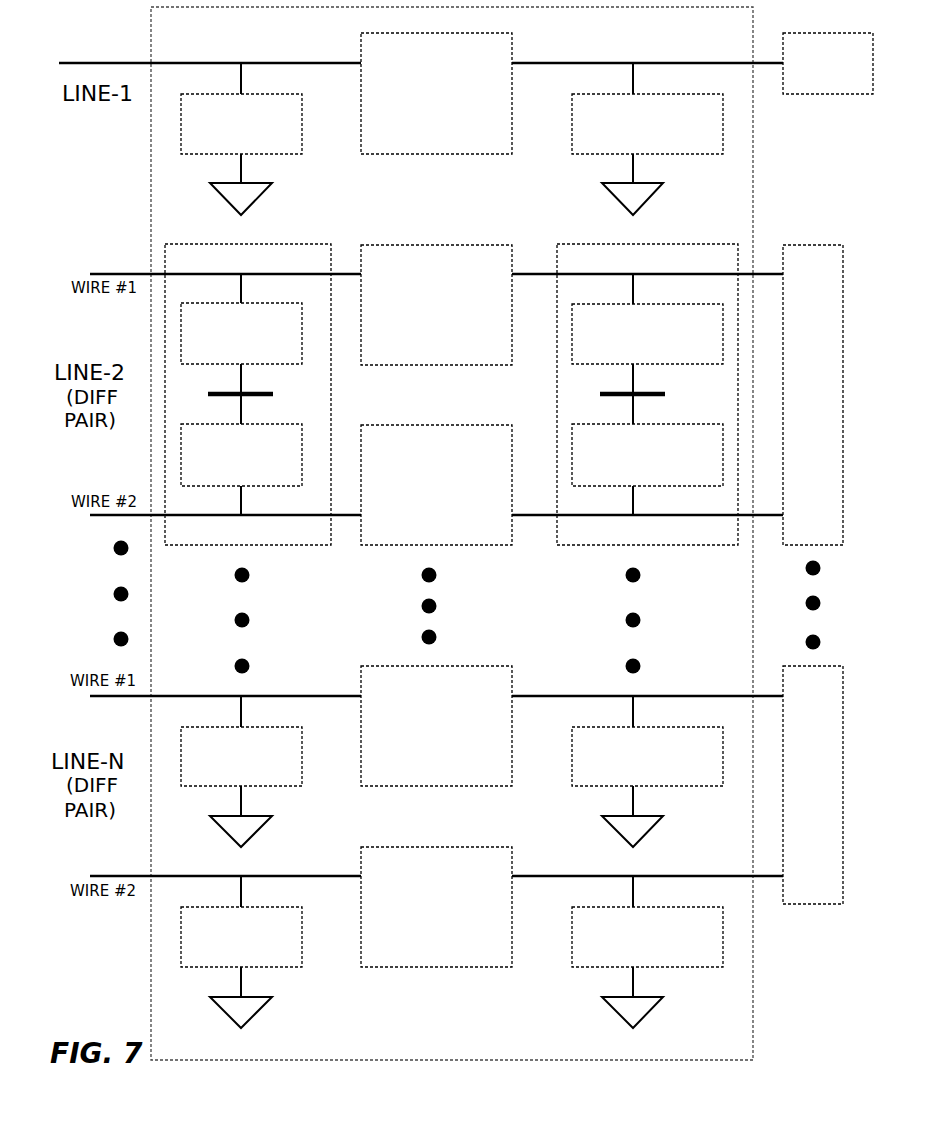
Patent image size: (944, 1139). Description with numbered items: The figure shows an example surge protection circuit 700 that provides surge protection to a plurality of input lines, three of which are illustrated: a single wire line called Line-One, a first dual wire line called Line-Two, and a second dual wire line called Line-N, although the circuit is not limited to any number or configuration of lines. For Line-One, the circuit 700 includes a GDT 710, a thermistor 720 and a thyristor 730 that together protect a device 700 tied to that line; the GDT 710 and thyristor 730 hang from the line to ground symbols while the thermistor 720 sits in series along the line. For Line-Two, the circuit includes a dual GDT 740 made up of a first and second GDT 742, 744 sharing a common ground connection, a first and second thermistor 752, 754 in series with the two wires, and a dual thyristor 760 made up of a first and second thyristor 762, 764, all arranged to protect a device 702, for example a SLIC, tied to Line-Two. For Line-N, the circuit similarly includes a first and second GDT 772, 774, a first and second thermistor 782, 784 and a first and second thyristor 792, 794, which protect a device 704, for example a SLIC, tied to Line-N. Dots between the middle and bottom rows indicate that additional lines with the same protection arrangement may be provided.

The surge protection circuit 700 is at (838, 94).
The device 702 is at (812, 245).
The device 704 is at (812, 904).
The GDT 710 is at (288, 154).
The thermistor 720 is at (441, 154).
The thyristor 730 is at (687, 154).
The dual GDT 740 is at (265, 394).
The first GDT 742 is at (202, 365).
The second GDT 744 is at (202, 486).
The first thermistor 752 is at (463, 365).
The second thermistor 754 is at (463, 545).
The dual thyristor 760 is at (630, 394).
The first thyristor 762 is at (593, 364).
The second thyristor 764 is at (597, 486).
The first GDT 772 is at (288, 786).
The second GDT 774 is at (288, 967).
The first thermistor 782 is at (441, 786).
The second thermistor 784 is at (441, 967).
The first thyristor 792 is at (701, 786).
The second thyristor 794 is at (701, 967).